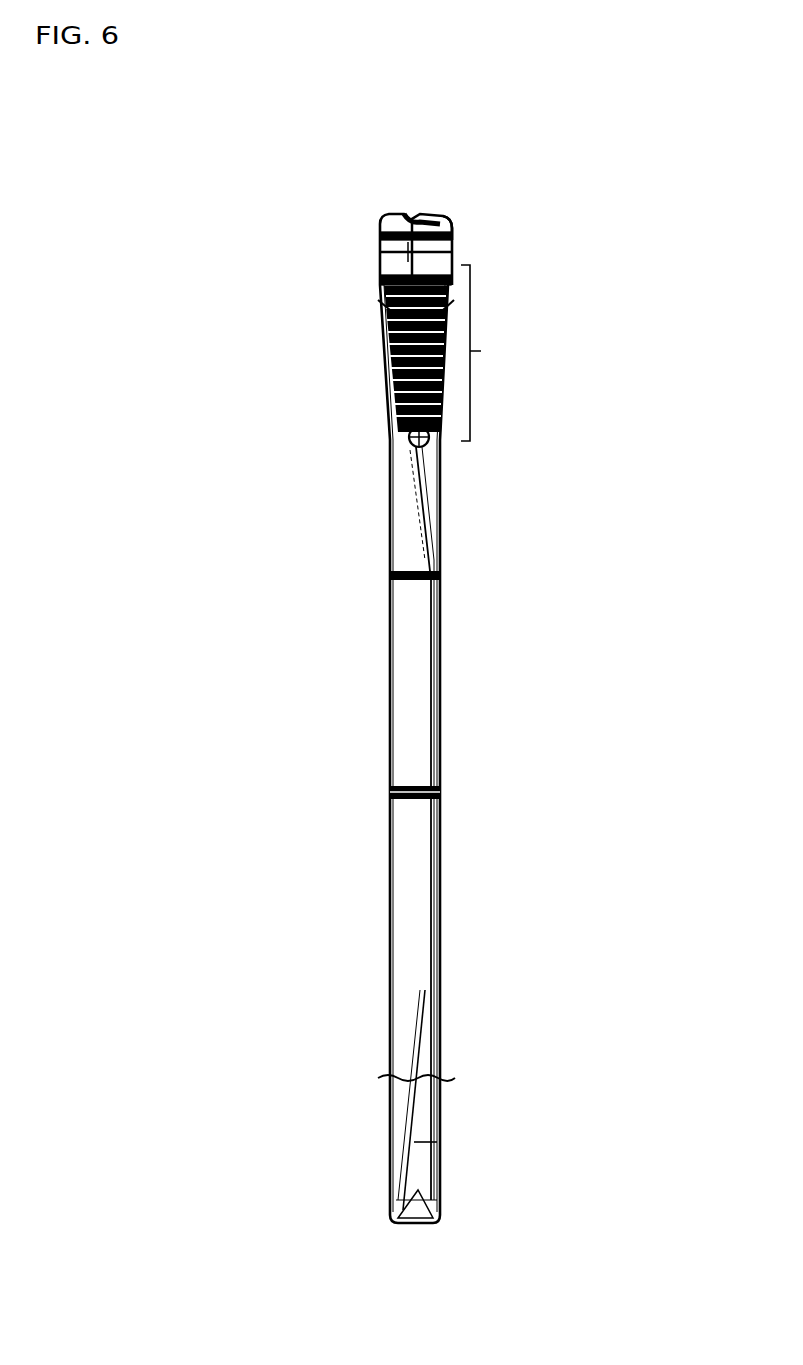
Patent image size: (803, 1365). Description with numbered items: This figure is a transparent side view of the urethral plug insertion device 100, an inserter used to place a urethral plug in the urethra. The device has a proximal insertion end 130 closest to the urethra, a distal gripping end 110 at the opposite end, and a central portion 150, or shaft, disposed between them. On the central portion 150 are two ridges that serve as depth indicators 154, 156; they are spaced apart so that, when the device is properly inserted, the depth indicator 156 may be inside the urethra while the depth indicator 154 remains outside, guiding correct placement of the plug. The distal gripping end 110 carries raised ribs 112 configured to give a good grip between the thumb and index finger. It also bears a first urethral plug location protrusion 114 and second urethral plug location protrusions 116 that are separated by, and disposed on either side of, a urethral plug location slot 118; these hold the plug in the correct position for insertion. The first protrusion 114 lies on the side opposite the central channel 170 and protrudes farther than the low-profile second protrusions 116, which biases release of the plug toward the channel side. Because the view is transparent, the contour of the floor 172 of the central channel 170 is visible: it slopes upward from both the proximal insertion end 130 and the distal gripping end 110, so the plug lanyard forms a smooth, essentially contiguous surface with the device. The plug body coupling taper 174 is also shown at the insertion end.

The urethral plug insertion device 100 is at (531, 199).
The distal gripping end 110 is at (383, 326).
The raised ribs 112 is at (505, 353).
The first urethral plug location protrusion 114 is at (385, 212).
The second urethral plug location protrusions 116 is at (450, 222).
The urethral plug location slot 118 is at (415, 212).
The proximal insertion end 130 is at (392, 1115).
The central portion 150 is at (400, 681).
The depth indicator 154 is at (388, 572).
The depth indicator 156 is at (390, 787).
The central channel 170 is at (437, 1100).
The floor 172 is at (430, 720).
The coupling taper 174 is at (392, 1209).